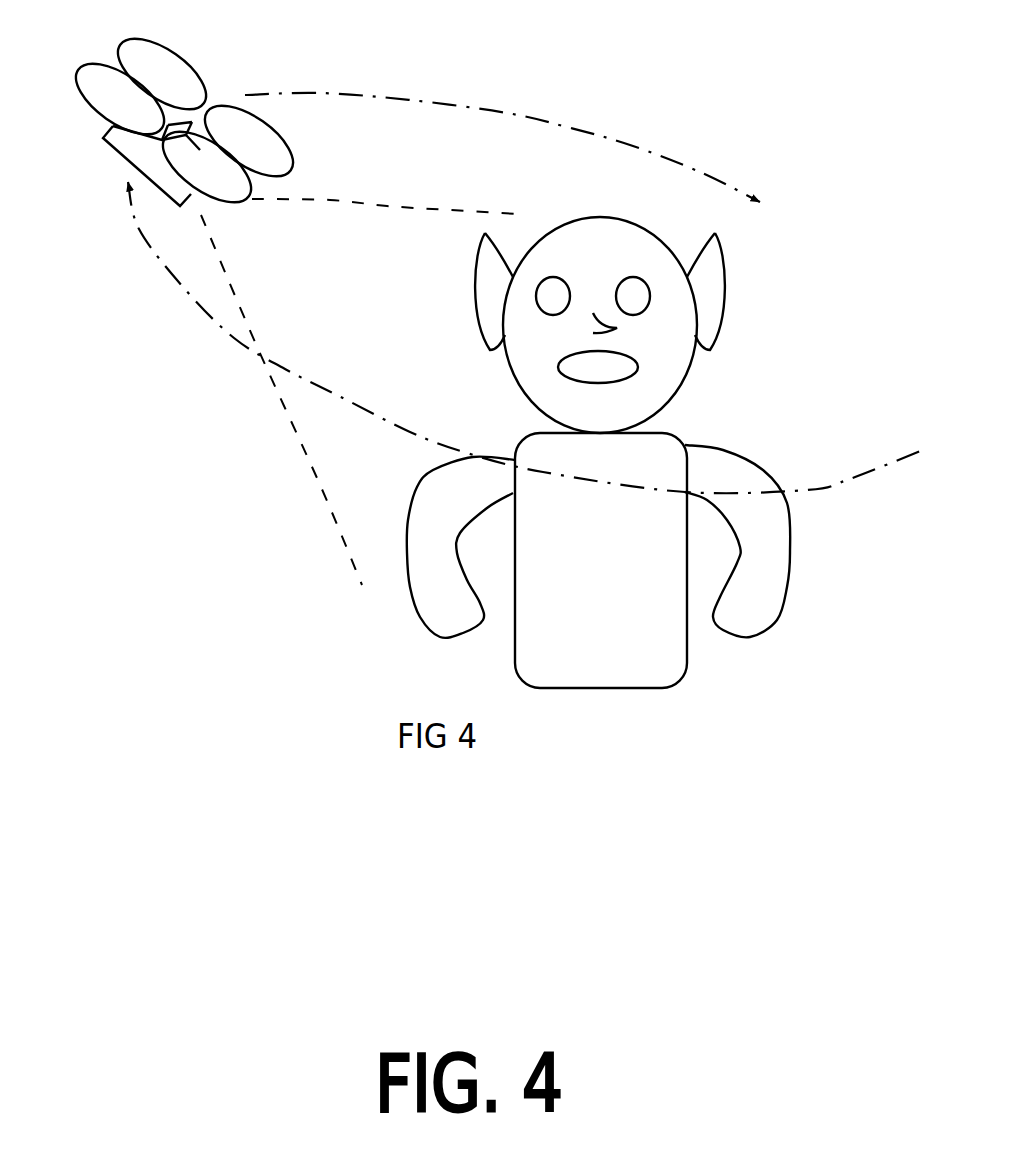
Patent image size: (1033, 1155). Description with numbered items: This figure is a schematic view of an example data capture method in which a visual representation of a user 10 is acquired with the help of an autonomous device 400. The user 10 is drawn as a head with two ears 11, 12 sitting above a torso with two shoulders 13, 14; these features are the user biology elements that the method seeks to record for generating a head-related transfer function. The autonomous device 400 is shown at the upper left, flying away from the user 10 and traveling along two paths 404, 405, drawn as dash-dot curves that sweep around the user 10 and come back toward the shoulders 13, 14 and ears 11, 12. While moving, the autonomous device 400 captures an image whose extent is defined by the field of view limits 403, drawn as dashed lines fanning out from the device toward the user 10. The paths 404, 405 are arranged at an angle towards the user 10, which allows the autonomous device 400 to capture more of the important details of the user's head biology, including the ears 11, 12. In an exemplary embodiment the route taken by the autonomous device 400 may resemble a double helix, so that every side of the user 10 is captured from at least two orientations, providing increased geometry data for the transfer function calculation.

The user 10 is at (623, 452).
The ear 11 is at (485, 342).
The ear 12 is at (725, 315).
The shoulder 13 is at (500, 442).
The shoulder 14 is at (687, 440).
The autonomous device 400 is at (89, 168).
The field of view limits 403 is at (442, 205).
The path 404 is at (188, 302).
The path 405 is at (597, 57).